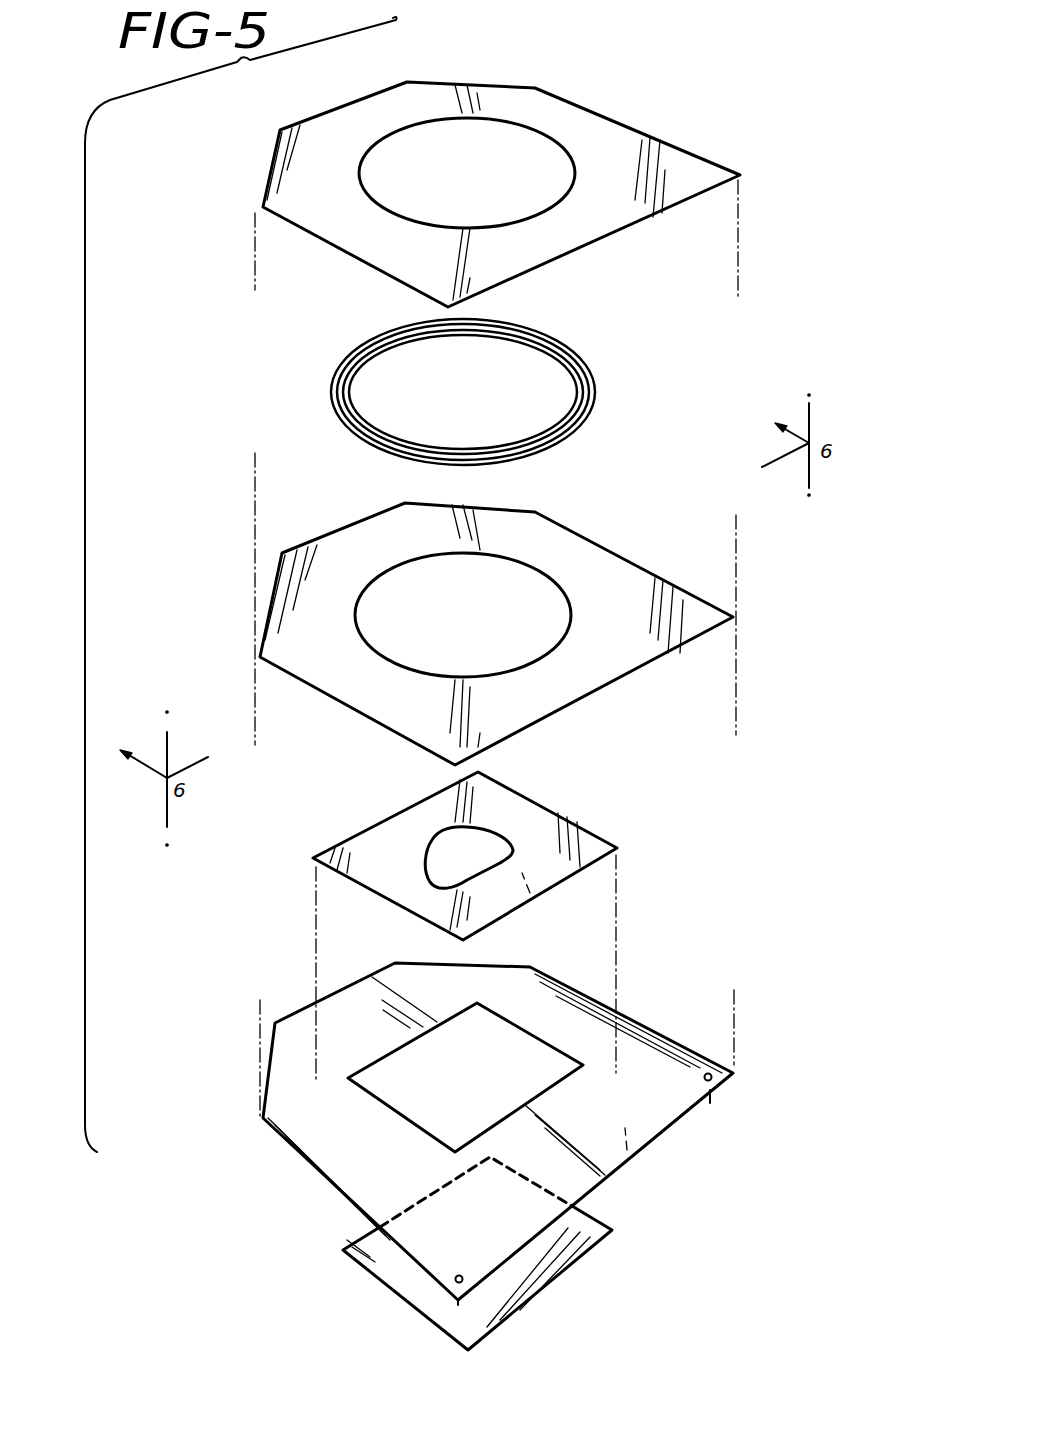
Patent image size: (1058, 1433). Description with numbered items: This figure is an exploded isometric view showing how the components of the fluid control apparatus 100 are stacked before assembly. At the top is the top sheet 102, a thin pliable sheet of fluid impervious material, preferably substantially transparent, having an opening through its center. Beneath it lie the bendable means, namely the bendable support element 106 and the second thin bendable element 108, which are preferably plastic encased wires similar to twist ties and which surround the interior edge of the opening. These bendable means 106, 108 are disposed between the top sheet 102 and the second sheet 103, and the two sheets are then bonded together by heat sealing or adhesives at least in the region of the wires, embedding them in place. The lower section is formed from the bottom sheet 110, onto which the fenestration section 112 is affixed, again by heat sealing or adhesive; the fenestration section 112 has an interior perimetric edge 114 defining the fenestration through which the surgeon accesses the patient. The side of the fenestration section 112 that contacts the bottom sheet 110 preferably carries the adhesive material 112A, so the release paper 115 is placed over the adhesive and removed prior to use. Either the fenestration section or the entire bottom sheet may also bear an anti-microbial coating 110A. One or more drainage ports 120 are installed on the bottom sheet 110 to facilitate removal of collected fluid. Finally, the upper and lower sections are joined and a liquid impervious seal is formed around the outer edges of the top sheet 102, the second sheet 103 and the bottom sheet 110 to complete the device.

The fluid control apparatus 100 is at (795, 115).
The top sheet 102 is at (597, 128).
The second sheet 103 is at (610, 565).
The bendable support element 106 is at (575, 350).
The second thin bendable element 108 is at (583, 388).
The bottom sheet 110 is at (347, 1163).
The anti-microbial coating 110A is at (628, 1160).
The fenestration section 112 is at (545, 820).
The adhesive material 112A is at (530, 893).
The interior perimetric edge 114 is at (433, 857).
The release paper 115 is at (373, 1278).
The drainage ports 120 is at (722, 1080).